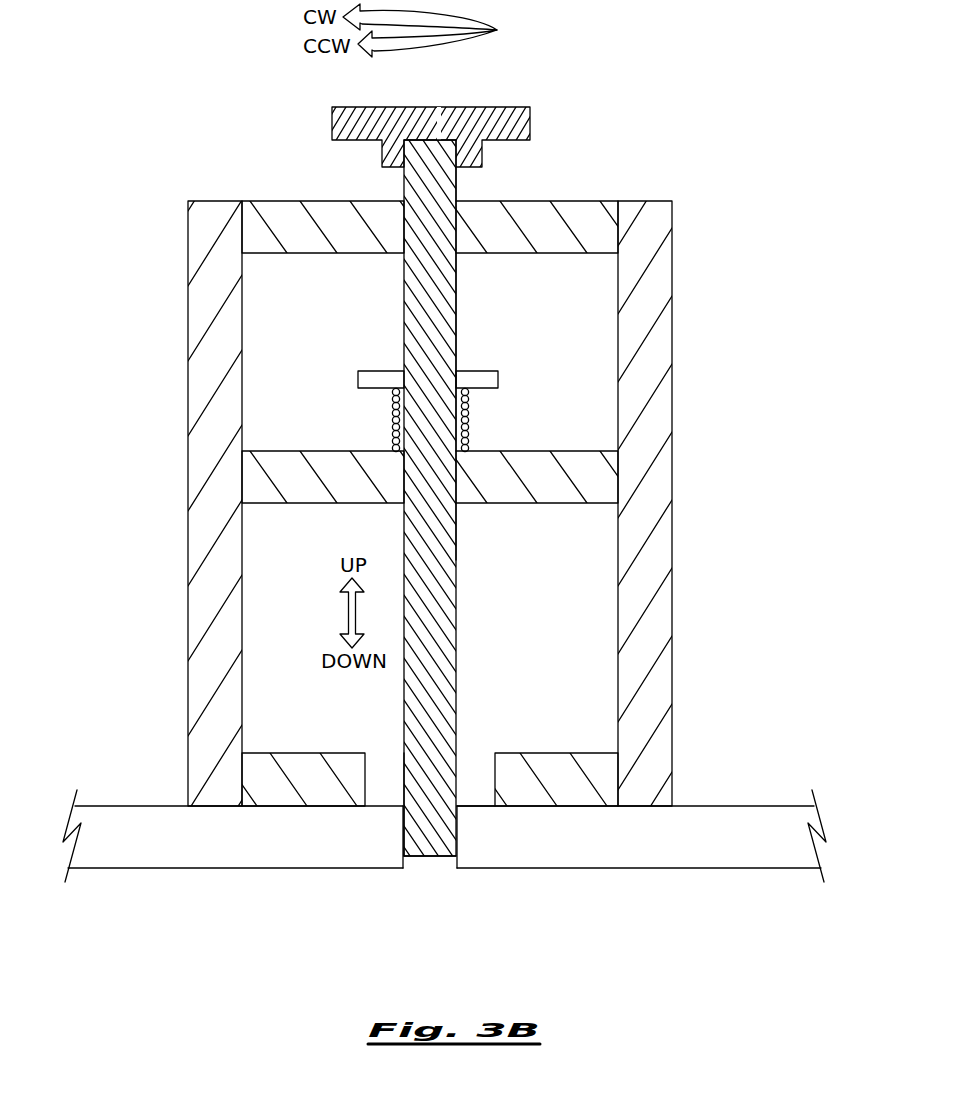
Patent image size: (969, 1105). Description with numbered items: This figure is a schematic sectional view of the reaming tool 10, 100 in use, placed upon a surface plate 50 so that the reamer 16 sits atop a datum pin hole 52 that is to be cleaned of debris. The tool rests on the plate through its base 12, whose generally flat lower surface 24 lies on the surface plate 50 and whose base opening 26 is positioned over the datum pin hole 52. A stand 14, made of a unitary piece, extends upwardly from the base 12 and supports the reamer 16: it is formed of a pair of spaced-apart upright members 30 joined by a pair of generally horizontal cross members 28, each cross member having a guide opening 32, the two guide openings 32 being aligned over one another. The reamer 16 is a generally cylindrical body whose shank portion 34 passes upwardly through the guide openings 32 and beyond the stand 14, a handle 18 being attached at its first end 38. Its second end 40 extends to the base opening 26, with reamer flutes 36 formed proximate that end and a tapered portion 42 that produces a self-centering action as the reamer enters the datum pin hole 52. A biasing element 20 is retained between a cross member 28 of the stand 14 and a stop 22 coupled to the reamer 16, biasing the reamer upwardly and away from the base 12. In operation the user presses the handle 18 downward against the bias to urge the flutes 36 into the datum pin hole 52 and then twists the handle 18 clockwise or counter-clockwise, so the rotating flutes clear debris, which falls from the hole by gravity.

The reaming tool 10 is at (228, 86).
The reaming tool 100 is at (444, 476).
The base 12 is at (268, 753).
The stand 14 is at (427, 505).
The reamer 16 is at (392, 278).
The handle 18 is at (531, 113).
The biasing element 20 is at (470, 432).
The stop 22 is at (358, 375).
The lower surface 24 is at (530, 806).
The base opening 26 is at (466, 751).
The cross members 28 is at (296, 201).
The upright members 30 is at (187, 320).
The guide opening 32 is at (461, 192).
The shank portion 34 is at (457, 292).
The reamer flutes 36 is at (404, 788).
The first end 38 is at (439, 140).
The second end 40 is at (457, 771).
The tapered portion 42 is at (404, 856).
The surface plate 50 is at (282, 868).
The datum pin hole 52 is at (422, 866).